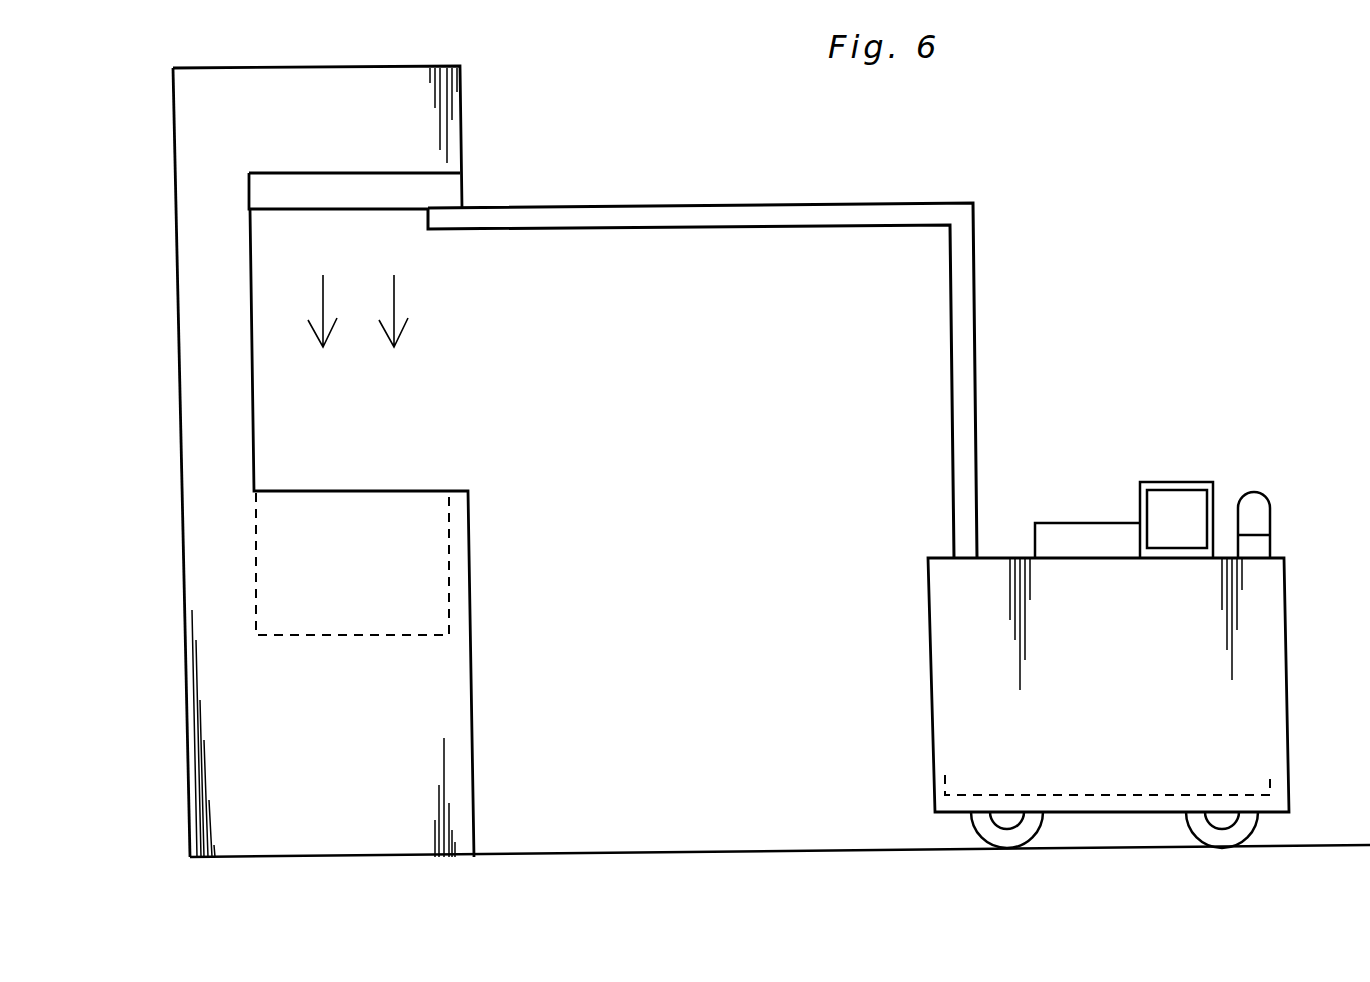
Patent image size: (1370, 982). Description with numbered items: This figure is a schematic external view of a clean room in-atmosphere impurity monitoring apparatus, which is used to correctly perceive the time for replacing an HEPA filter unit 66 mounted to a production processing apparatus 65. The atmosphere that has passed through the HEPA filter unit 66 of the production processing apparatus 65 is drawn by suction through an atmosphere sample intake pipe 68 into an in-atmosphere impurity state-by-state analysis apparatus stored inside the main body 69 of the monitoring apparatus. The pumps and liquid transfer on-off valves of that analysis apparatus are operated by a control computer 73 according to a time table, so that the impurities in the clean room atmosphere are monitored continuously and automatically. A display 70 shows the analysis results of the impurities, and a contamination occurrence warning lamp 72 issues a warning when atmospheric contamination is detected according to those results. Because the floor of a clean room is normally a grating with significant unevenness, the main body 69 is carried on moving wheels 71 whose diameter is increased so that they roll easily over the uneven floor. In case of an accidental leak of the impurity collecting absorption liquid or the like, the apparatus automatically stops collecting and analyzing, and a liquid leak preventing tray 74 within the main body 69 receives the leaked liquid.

The production processing apparatus 65 is at (173, 97).
The HEPA filter unit 66 is at (374, 173).
The atmosphere sample intake pipe 68 is at (608, 205).
The main body 69 is at (1285, 622).
The display 70 is at (1177, 482).
The moving wheels 71 is at (1256, 826).
The contamination occurrence warning lamp 72 is at (1265, 496).
The control computer 73 is at (1089, 522).
The liquid leak preventing tray 74 is at (1270, 778).